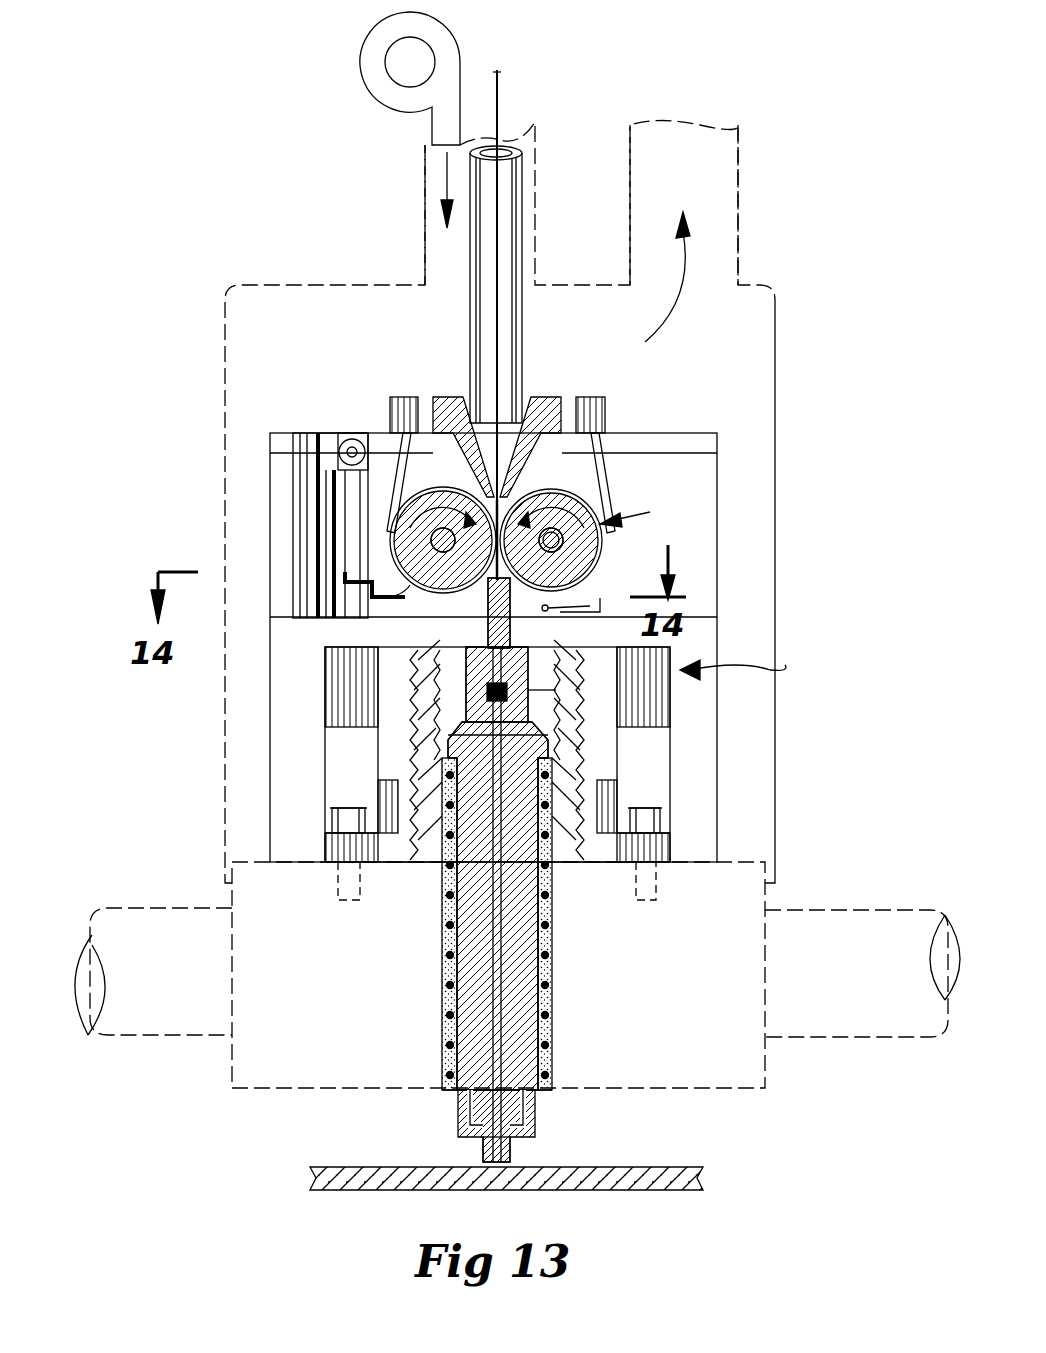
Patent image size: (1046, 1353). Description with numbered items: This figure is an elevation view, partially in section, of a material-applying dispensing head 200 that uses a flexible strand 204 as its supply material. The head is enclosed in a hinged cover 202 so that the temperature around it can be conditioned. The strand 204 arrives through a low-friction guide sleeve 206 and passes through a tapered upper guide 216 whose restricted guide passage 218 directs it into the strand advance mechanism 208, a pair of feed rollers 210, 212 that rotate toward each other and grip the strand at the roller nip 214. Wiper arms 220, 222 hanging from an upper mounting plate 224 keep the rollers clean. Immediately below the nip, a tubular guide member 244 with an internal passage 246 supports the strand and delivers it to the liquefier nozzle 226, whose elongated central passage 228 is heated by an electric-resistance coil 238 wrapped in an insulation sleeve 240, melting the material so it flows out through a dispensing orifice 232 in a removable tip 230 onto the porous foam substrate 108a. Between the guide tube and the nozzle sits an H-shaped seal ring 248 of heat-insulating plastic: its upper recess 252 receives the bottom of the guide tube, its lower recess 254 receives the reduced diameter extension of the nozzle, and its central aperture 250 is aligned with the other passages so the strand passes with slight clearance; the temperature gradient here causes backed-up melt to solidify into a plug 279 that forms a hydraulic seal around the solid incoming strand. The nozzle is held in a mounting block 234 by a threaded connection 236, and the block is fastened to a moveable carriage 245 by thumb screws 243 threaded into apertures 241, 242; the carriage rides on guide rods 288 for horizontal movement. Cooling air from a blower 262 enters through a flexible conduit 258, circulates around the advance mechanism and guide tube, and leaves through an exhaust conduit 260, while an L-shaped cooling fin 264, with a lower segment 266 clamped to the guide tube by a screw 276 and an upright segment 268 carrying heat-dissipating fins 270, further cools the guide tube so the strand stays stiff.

The substrate 108a is at (318, 1167).
The dispensing head 200 is at (760, 669).
The cover 202 is at (225, 320).
The flexible strand 204 is at (500, 78).
The guide sleeve 206 is at (480, 319).
The strand advance mechanism 208 is at (650, 512).
The feed roller 210 is at (462, 490).
The feed roller 212 is at (580, 545).
The roller nip 214 is at (502, 548).
The tapered upper guide 216 is at (530, 402).
The restricted guide passage 218 is at (520, 492).
The wiper arm 220 is at (405, 450).
The wiper arm 222 is at (603, 503).
The upper mounting plate 224 is at (697, 433).
The liquefier nozzle 226 is at (530, 975).
The central passage 228 is at (495, 1045).
The removable tip 230 is at (520, 1160).
The dispensing orifice 232 is at (485, 1152).
The mounting block 234 is at (670, 737).
The threaded connection 236 is at (440, 745).
The electric-resistance coil 238 is at (450, 1074).
The insulation sleeve 240 is at (552, 1061).
The threaded aperture 241 is at (340, 898).
The threaded aperture 242 is at (650, 898).
The thumb screw 243 is at (345, 808).
The tubular guide member 244 is at (510, 633).
The moveable carriage 245 is at (232, 1085).
The internal passage 246 is at (488, 633).
The seal ring 248 is at (466, 700).
The central aperture 250 is at (487, 700).
The upper recess 252 is at (560, 700).
The lower recess 254 is at (560, 747).
The flexible conduit 258 is at (425, 203).
The exhaust flexible conduit 260 is at (740, 141).
The blower 262 is at (360, 63).
The cooling fin 264 is at (275, 535).
The lower segment 266 is at (598, 614).
The upwardly extending segment 268 is at (295, 470).
The heat-dissipating fins 270 is at (345, 620).
The screw 276 is at (588, 611).
The plug 279 is at (556, 722).
The guide rod 288 is at (118, 908).